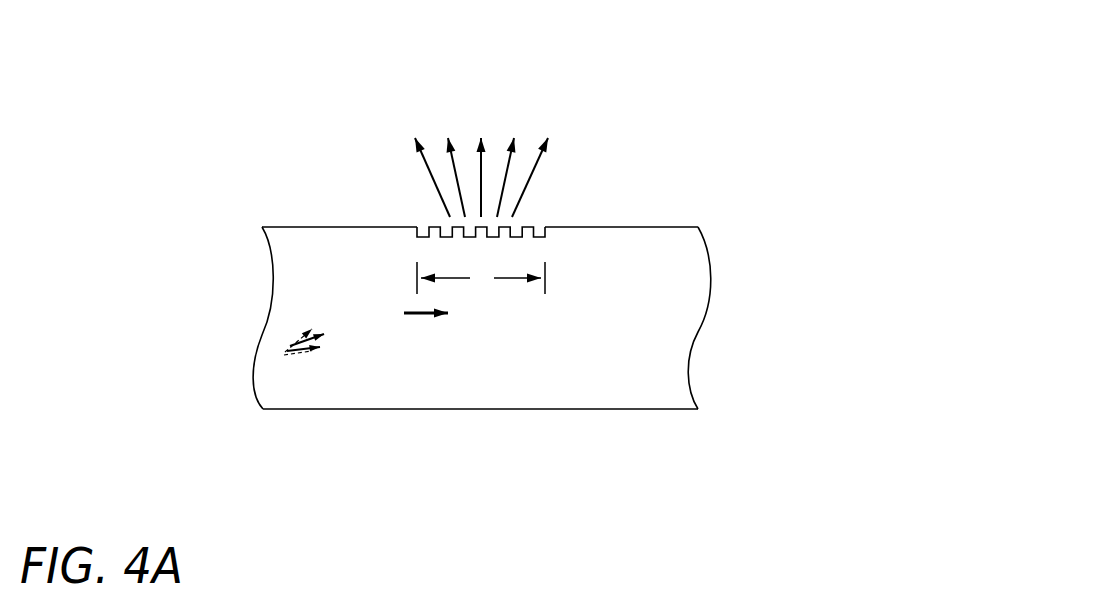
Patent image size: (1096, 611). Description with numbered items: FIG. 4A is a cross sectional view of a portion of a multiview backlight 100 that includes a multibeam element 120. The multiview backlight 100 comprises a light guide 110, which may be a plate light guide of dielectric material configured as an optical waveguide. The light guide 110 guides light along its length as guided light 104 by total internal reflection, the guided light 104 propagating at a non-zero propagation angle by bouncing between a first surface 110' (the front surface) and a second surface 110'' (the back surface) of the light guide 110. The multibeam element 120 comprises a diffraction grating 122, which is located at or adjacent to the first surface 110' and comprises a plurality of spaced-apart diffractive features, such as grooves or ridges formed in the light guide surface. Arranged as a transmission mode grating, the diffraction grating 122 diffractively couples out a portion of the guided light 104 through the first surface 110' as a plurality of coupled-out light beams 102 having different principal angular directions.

The multiview backlight 100 is at (815, 78).
The coupled-out light beams 102 is at (574, 157).
The guided light 104 is at (318, 361).
The light guide 110 is at (498, 267).
The first surface 110' is at (528, 195).
The second surface 110'' is at (532, 441).
The multibeam element 120 is at (308, 122).
The diffraction grating 122 is at (410, 203).